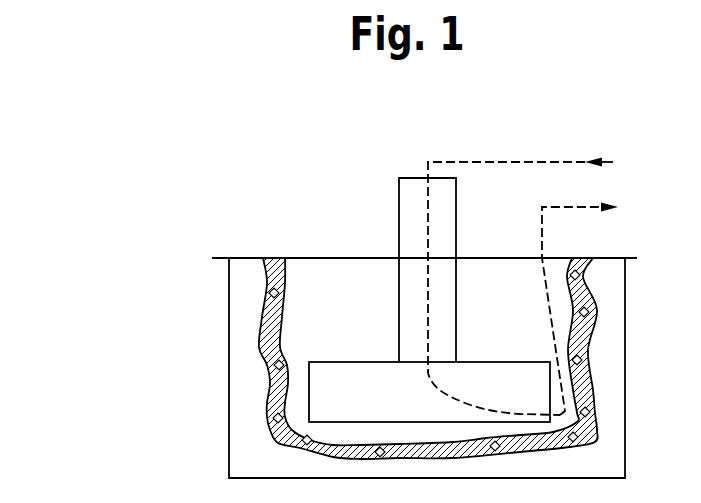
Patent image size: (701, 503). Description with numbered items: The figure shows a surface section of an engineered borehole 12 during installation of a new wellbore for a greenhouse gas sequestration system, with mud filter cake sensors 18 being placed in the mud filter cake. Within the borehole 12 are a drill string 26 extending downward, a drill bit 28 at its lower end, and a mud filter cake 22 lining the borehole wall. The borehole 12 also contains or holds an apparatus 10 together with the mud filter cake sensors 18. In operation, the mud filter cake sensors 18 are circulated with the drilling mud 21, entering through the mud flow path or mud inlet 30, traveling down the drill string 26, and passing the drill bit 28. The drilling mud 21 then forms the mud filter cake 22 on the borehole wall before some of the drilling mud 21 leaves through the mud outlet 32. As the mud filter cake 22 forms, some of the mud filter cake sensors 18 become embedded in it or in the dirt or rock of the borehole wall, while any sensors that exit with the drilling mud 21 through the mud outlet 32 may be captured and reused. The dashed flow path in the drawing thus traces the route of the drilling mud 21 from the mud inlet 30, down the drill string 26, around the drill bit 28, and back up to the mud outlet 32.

The apparatus 10 is at (198, 301).
The engineered borehole 12 is at (347, 281).
The mud filter cake sensors 18 is at (480, 358).
The drilling mud 21 is at (328, 286).
The mud filter cake 22 is at (588, 347).
The drill string 26 is at (412, 314).
The drill bit 28 is at (322, 383).
The mud inlet 30 is at (578, 161).
The mud outlet 32 is at (578, 208).